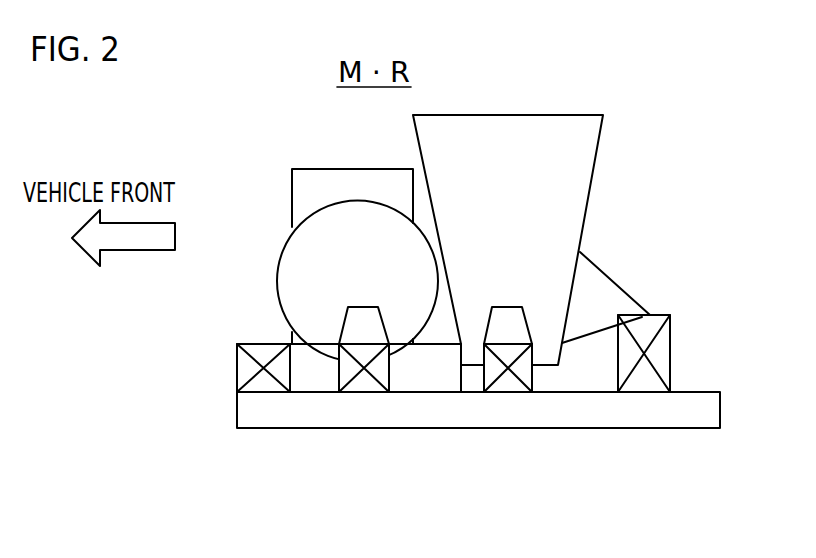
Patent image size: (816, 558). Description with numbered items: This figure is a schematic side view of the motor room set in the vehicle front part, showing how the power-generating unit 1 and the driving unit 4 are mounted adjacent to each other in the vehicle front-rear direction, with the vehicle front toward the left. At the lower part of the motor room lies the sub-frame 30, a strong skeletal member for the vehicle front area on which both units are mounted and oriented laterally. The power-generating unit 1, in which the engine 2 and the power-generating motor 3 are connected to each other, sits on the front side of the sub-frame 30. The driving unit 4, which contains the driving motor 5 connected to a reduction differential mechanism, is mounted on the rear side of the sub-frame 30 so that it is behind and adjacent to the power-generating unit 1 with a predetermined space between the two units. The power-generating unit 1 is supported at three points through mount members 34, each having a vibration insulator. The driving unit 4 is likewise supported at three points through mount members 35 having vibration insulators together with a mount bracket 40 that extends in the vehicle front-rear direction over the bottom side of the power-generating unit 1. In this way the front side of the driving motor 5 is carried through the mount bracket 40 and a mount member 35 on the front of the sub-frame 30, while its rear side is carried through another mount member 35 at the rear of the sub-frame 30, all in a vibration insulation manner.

The power-generating unit 1 is at (238, 168).
The engine 2 is at (290, 181).
The power-generating motor 3 is at (280, 260).
The driving unit 4 is at (539, 202).
The driving motor 5 is at (597, 112).
The sub-frame 30 is at (672, 428).
The mount member 34 is at (363, 382).
The mount member 35 is at (236, 360).
The mount bracket 40 is at (318, 382).